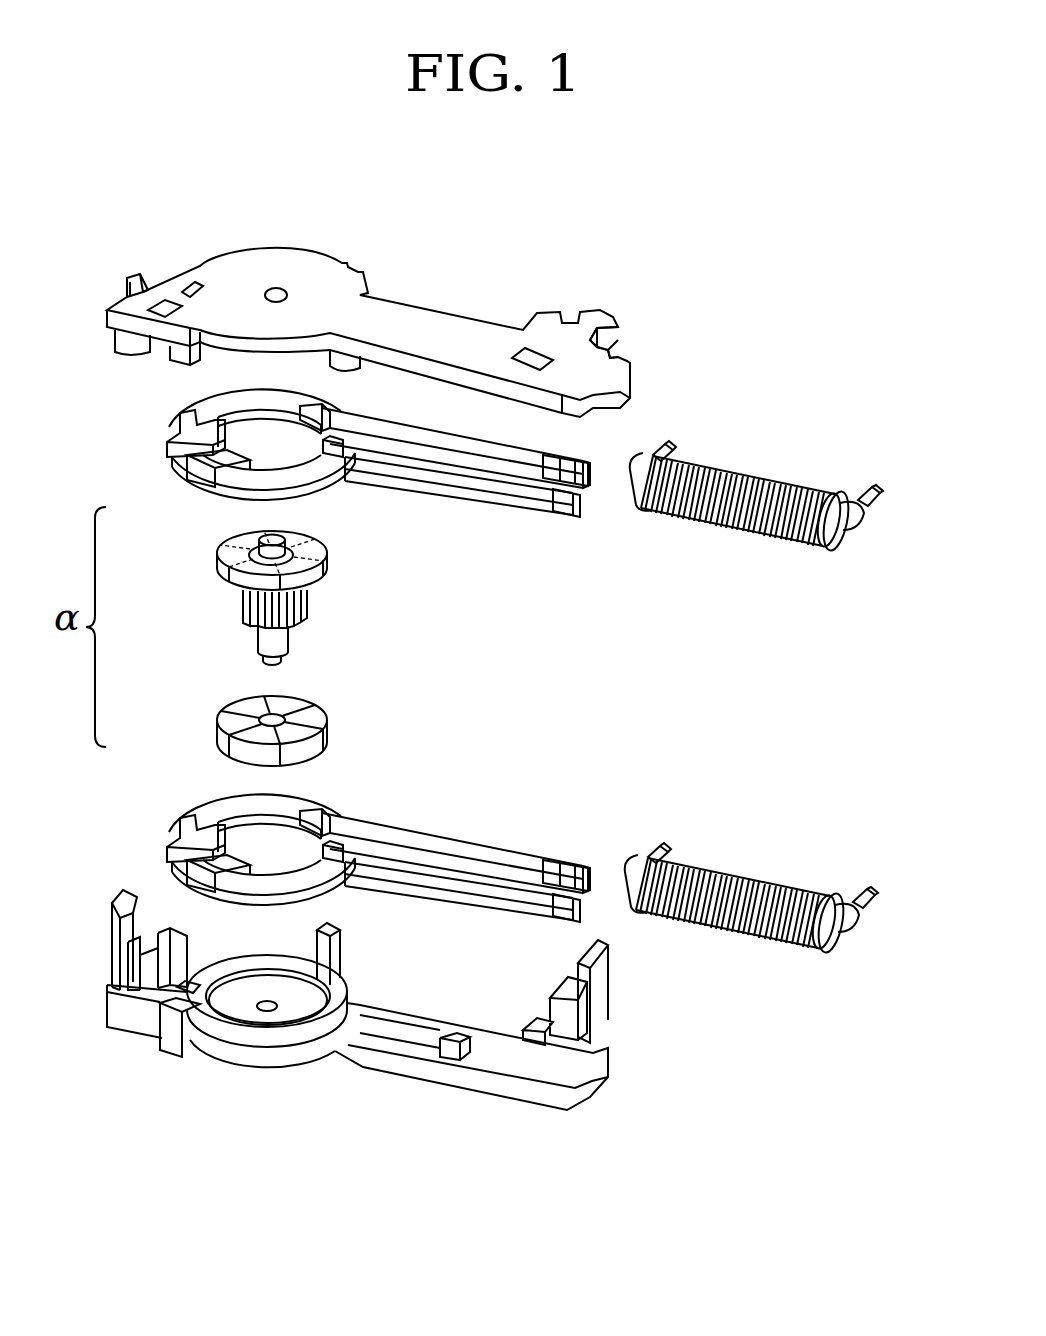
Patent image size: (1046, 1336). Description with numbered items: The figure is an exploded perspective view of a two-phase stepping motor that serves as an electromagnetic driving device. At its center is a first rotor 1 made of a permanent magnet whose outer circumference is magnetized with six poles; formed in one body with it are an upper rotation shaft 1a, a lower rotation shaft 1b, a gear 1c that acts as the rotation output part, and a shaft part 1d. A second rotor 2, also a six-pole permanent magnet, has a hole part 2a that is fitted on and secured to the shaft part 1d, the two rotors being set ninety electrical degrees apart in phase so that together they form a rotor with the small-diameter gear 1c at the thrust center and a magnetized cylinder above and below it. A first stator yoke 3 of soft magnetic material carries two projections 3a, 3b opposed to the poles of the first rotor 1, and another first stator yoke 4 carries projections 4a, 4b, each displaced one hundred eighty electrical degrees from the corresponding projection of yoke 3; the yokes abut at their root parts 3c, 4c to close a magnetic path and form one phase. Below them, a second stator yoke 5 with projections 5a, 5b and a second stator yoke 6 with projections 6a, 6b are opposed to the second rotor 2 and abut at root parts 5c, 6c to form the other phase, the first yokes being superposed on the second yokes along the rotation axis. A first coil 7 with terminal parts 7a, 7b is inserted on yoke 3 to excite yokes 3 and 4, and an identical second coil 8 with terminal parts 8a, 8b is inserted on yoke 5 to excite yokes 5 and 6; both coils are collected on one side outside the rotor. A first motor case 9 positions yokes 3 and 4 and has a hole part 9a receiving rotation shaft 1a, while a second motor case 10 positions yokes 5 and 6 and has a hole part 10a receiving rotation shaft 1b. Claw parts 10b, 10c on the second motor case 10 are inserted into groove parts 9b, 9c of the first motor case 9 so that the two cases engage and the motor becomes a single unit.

The first rotor 1 is at (327, 550).
The rotation shaft 1a is at (273, 533).
The rotation shaft 1b is at (283, 653).
The gear 1c is at (293, 612).
The shaft part 1d is at (257, 640).
The second rotor 2 is at (327, 720).
The hole part 2a is at (240, 690).
The first stator yoke 3 is at (440, 437).
The projection 3a is at (216, 430).
The projection 3b is at (330, 406).
The root part 3c is at (548, 458).
The first stator yoke 4 is at (462, 468).
The projection 4a is at (230, 458).
The projection 4b is at (335, 445).
The root part 4c is at (545, 490).
The second stator yoke 5 is at (379, 828).
The projection 5a is at (184, 811).
The projection 5b is at (344, 793).
The root part 5c is at (569, 838).
The second stator yoke 6 is at (372, 911).
The projection 6a is at (218, 900).
The projection 6b is at (355, 896).
The root part 6c is at (548, 930).
The first coil 7 is at (753, 473).
The terminal part 7a is at (667, 450).
The terminal part 7b is at (873, 490).
The second coil 8 is at (742, 880).
The terminal part 8a is at (698, 834).
The terminal part 8b is at (890, 880).
The first motor case 9 is at (253, 258).
The hole part 9a is at (278, 289).
The groove part 9b is at (140, 273).
The groove part 9c is at (614, 324).
The second motor case 10 is at (502, 1068).
The hole part 10a is at (263, 1010).
The claw part 10b is at (115, 923).
The claw part 10c is at (597, 985).